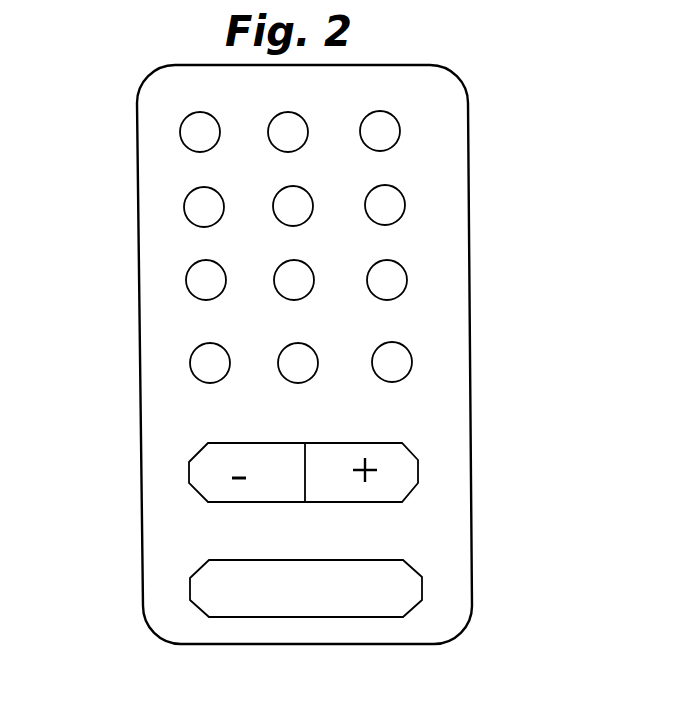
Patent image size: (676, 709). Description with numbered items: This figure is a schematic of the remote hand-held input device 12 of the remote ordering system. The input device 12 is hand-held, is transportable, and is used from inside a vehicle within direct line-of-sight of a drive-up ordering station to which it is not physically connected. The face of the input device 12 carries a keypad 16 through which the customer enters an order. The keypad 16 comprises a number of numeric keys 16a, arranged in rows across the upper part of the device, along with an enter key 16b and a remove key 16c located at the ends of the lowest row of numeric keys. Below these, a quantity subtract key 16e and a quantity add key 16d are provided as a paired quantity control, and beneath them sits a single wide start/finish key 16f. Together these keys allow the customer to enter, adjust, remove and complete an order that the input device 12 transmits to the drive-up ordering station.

The input device 12 is at (483, 161).
The keypad 16 is at (465, 312).
The numeric keys 16a is at (198, 134).
The enter key 16b is at (195, 363).
The remove key 16c is at (405, 362).
The quantity add key 16d is at (405, 480).
The quantity subtract key 16e is at (203, 470).
The start/finish key 16f is at (408, 593).